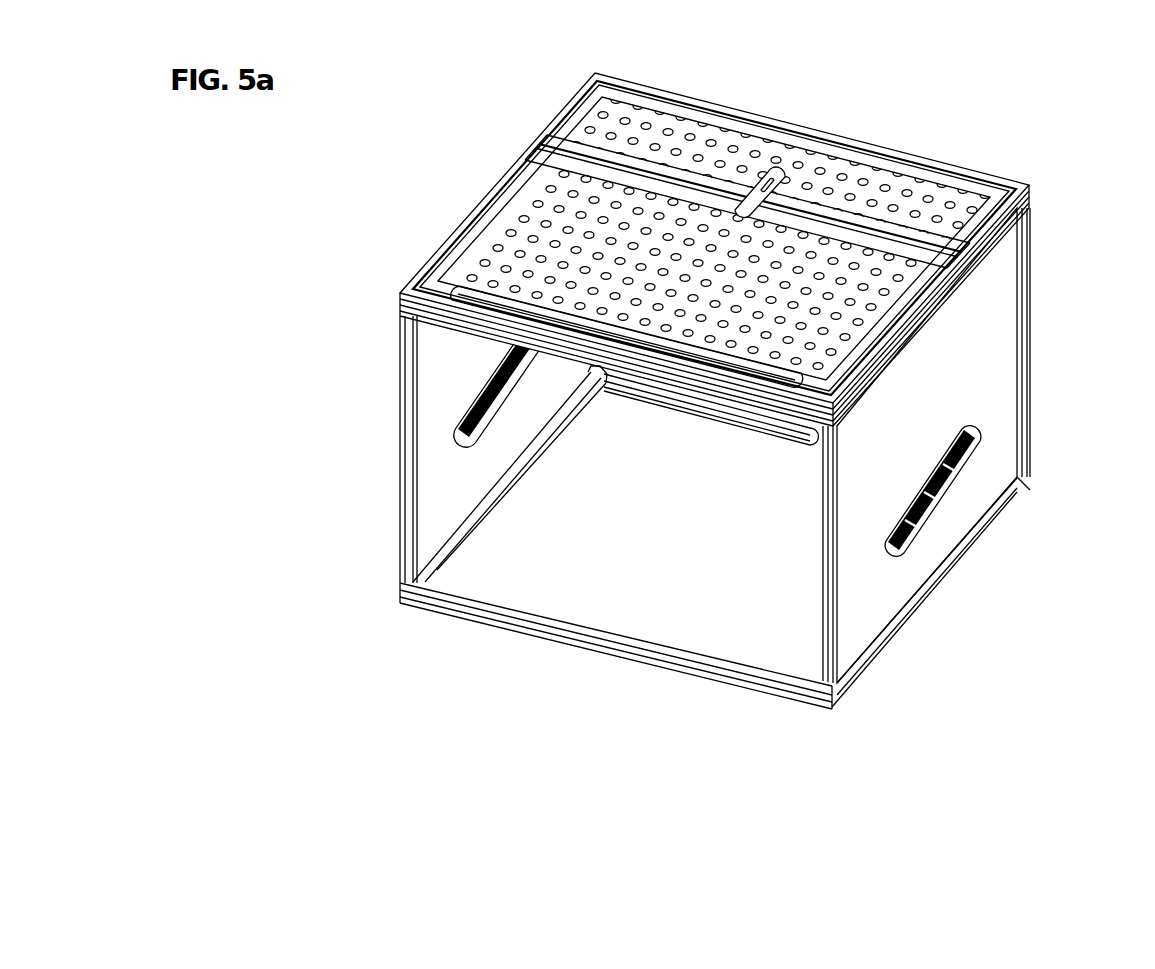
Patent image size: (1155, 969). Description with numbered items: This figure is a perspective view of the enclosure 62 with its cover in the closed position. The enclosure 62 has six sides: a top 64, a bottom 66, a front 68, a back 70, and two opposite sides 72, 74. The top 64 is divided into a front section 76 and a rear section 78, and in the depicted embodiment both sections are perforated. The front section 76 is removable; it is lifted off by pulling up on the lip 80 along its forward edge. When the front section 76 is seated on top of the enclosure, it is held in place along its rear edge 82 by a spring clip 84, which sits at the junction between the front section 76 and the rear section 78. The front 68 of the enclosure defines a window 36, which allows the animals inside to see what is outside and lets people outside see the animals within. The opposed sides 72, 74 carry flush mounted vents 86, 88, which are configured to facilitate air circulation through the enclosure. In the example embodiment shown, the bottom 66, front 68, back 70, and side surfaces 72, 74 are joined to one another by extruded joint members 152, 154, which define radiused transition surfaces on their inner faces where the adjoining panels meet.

The window 36 is at (437, 497).
The enclosure 62 is at (1045, 180).
The top 64 is at (922, 178).
The bottom 66 is at (770, 703).
The front 68 is at (634, 499).
The back 70 is at (1040, 247).
The side 72 is at (993, 337).
The side 74 is at (450, 223).
The front section 76 is at (527, 208).
The rear section 78 is at (610, 108).
The lip 80 is at (470, 292).
The rear edge 82 is at (545, 165).
The spring clip 84 is at (752, 195).
The vent 86 is at (926, 496).
The vent 88 is at (500, 399).
The extruded joint member 152 is at (505, 483).
The extruded joint member 154 is at (405, 479).